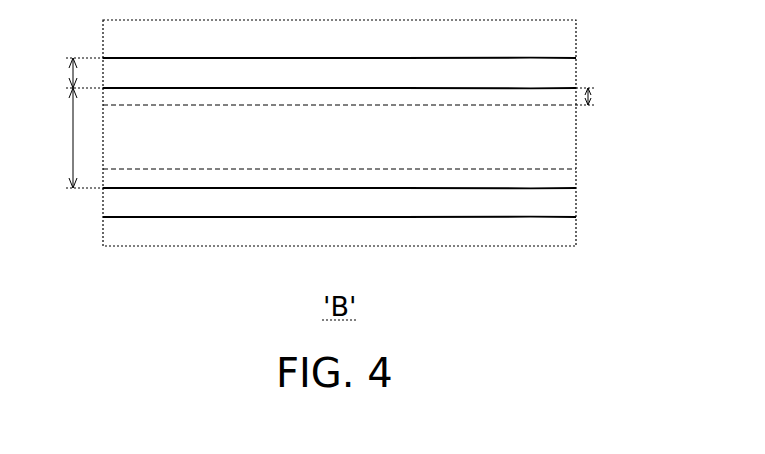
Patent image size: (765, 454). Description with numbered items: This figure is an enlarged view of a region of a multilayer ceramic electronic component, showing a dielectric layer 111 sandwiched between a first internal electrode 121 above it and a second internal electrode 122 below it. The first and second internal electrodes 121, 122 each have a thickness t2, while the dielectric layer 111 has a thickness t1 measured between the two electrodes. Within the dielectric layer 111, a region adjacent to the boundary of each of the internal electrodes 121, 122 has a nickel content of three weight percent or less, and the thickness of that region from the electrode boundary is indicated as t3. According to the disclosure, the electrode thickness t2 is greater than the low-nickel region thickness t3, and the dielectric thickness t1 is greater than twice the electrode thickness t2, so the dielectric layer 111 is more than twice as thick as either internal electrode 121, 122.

The dielectric layer 111 is at (570, 133).
The first internal electrode 121 is at (570, 66).
The second internal electrode 122 is at (570, 208).
The thickness of the dielectric layer t1 is at (74, 138).
The thickness of the internal electrodes t2 is at (74, 73).
The thickness of the low-nickel region of the dielectric layer t3 is at (596, 96).